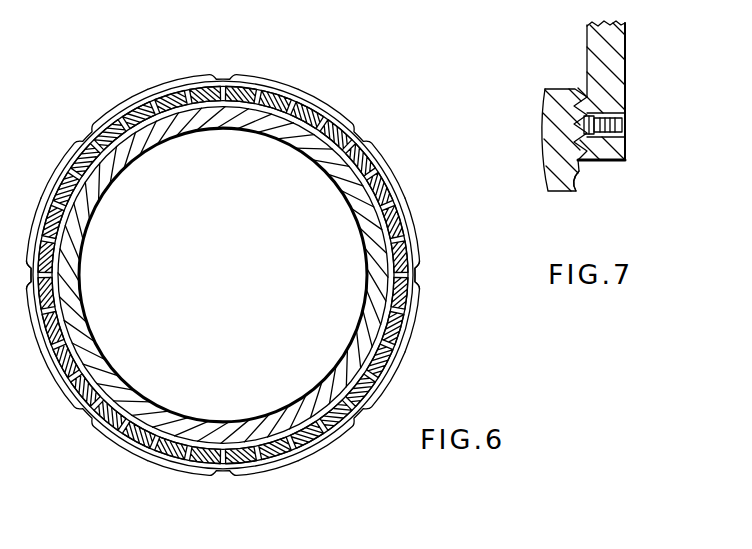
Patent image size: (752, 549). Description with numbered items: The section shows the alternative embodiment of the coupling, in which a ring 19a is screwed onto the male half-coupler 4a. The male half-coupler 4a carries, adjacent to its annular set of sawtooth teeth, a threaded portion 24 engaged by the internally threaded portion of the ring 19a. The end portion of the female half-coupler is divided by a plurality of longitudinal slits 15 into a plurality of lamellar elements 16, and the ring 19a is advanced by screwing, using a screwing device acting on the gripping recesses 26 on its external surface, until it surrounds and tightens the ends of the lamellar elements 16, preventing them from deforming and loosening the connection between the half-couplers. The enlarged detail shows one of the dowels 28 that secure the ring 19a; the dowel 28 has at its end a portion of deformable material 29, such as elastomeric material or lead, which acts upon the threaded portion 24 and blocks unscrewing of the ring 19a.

In FIG. 6, the ring 19a is at (349, 130).
In FIG. 7, the ring 19a is at (608, 58).
In FIG. 6, the male half-coupler 4a is at (345, 177).
In FIG. 7, the male half-coupler 4a is at (557, 115).
In FIG. 6, the longitudinal slits 15 is at (229, 95).
In FIG. 6, the lamellar elements 16 is at (216, 94).
In FIG. 6, the gripping recesses 26 is at (422, 276).
In FIG. 7, the dowels 28 is at (622, 128).
In FIG. 7, the portion of deformable material 29 is at (600, 162).
In FIG. 7, the threaded portion 24 is at (579, 186).